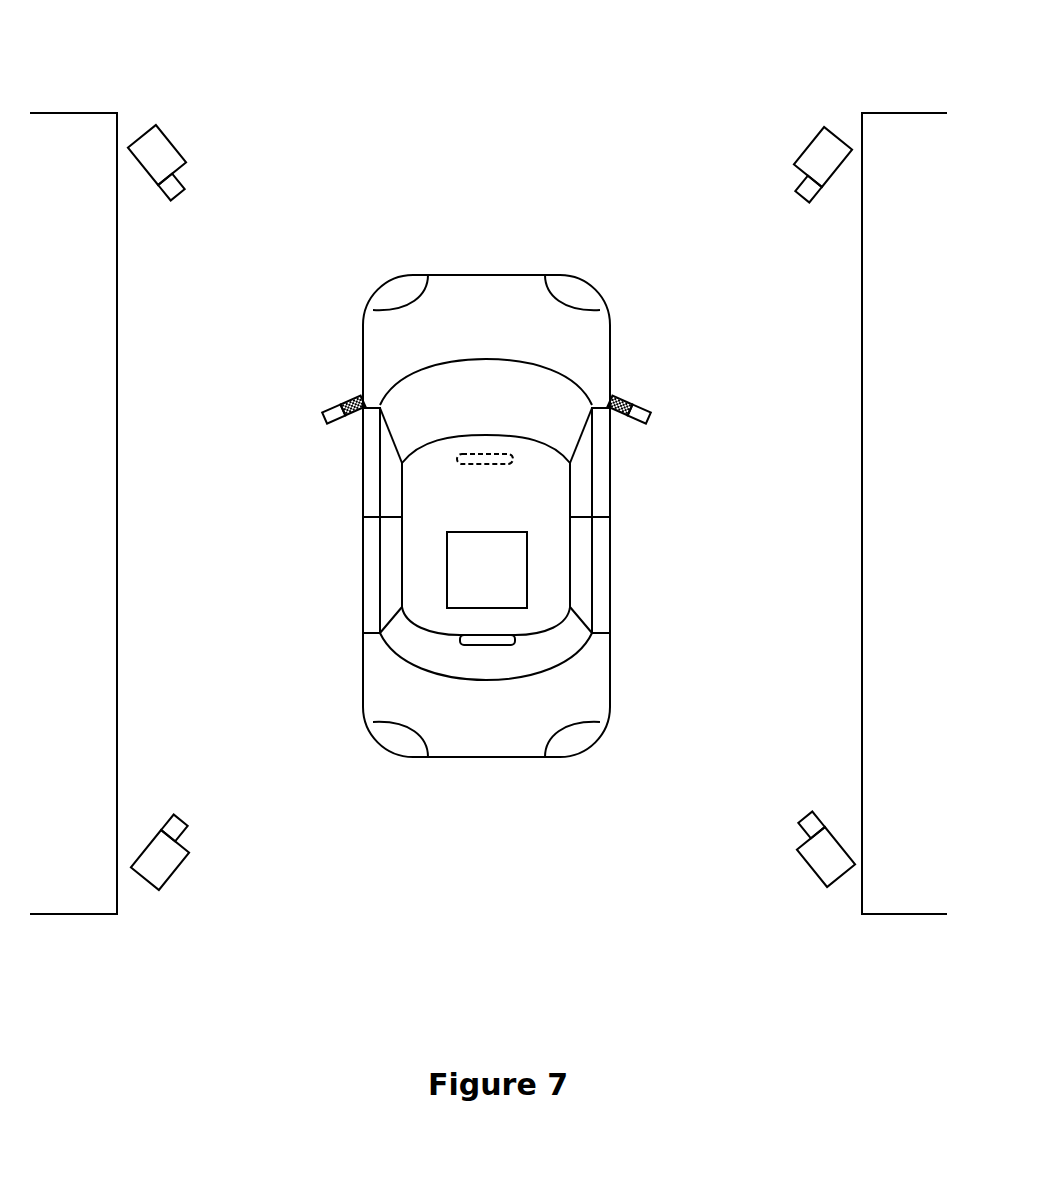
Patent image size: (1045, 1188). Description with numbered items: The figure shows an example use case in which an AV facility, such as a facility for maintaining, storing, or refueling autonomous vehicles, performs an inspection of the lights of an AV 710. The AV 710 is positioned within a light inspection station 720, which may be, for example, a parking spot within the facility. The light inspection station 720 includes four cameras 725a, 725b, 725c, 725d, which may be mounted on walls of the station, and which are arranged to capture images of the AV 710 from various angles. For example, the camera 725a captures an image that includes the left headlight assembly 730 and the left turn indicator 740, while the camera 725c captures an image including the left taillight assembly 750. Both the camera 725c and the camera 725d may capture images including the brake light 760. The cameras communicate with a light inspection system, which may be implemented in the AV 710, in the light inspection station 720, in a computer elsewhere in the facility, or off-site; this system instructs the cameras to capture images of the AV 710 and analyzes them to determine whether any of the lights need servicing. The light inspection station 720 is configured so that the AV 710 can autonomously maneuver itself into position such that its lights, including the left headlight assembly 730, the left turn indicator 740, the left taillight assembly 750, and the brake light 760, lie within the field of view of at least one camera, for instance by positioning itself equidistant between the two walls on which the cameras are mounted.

The AV 710 is at (505, 327).
The light inspection station 720 is at (457, 128).
The camera 725a is at (193, 152).
The camera 725b is at (788, 162).
The camera 725c is at (200, 853).
The camera 725d is at (792, 868).
The left headlight assembly 730 is at (382, 298).
The left turn indicator 740 is at (330, 412).
The left taillight assembly 750 is at (393, 747).
The brake light 760 is at (497, 645).